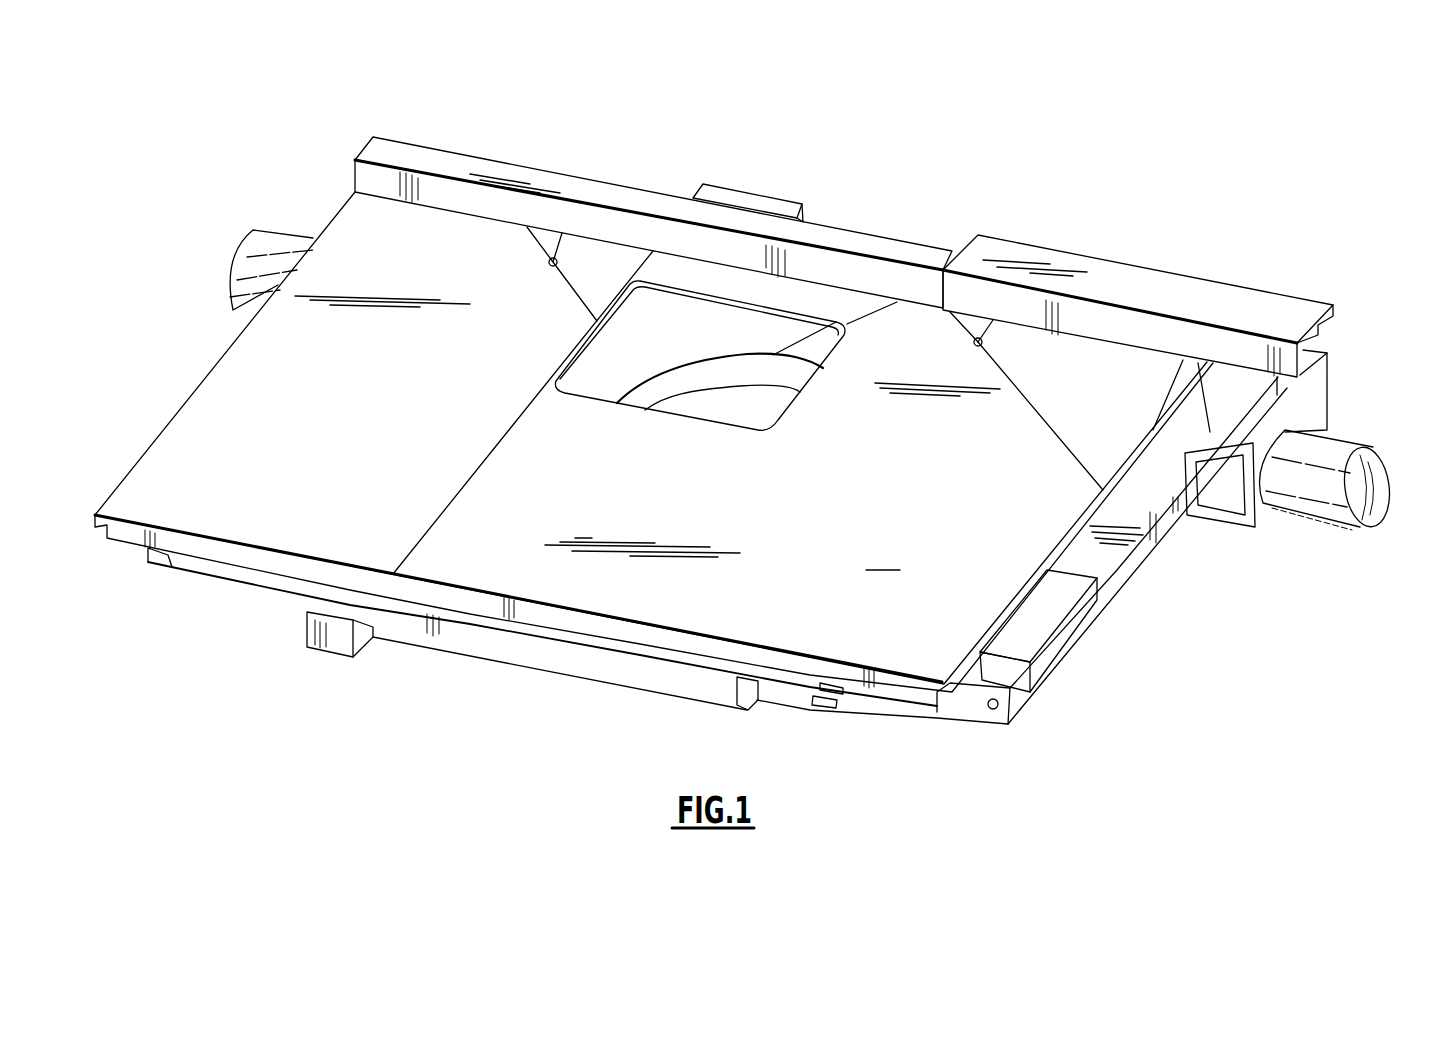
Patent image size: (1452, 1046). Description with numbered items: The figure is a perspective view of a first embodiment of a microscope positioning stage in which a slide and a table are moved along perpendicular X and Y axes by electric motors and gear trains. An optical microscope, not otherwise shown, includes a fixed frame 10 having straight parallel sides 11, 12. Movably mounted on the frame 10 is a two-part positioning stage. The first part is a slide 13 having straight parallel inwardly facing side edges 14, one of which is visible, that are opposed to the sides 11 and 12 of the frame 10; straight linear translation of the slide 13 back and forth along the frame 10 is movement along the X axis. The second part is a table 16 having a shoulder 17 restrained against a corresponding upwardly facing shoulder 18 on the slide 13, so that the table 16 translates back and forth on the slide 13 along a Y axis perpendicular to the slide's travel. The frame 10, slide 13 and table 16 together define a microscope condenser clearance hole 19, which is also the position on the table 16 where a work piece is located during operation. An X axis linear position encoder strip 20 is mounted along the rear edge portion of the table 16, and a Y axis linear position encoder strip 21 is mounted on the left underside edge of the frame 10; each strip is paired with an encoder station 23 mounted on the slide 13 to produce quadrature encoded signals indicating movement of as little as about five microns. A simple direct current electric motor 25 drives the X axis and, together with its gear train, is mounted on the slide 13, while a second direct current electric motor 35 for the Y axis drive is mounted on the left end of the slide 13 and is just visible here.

The fixed frame 10 is at (565, 670).
The side 11 is at (305, 600).
The side 12 is at (818, 705).
The slide 13 is at (1110, 268).
The side edge 14 is at (843, 697).
The table 16 is at (654, 442).
The shoulder 17 is at (1067, 547).
The upwardly facing shoulder 18 is at (1047, 623).
The microscope condenser clearance hole 19 is at (760, 413).
The X axis linear position encoder strip 20 is at (455, 160).
The Y axis linear position encoder strip 21 is at (333, 648).
The encoder station 23 is at (755, 193).
The direct current electric motor 25 is at (1385, 445).
The direct current electric motor 35 is at (238, 258).